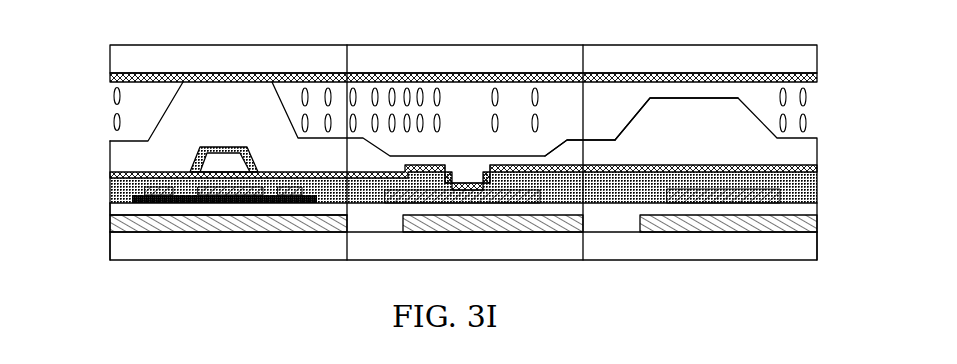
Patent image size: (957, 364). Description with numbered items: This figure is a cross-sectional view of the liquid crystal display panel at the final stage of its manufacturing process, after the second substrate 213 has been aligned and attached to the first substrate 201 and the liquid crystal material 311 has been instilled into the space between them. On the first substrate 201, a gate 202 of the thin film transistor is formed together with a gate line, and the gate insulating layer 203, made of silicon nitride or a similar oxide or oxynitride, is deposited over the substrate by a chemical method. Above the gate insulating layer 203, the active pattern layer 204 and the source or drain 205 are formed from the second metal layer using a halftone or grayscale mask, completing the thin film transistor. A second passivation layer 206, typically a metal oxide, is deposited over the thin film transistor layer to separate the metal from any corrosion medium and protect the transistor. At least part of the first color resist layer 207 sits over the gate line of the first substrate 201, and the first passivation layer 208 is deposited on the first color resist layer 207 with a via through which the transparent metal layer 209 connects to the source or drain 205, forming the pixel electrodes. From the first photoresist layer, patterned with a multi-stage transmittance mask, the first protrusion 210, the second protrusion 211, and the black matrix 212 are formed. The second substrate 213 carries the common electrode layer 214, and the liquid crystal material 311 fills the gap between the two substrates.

The first substrate 201 is at (120, 250).
The gate 202 is at (248, 225).
The gate insulating layer 203 is at (122, 212).
The active pattern layer 204 is at (128, 197).
The source or drain 205 is at (160, 192).
The second passivation layer 206 is at (112, 187).
The first color resist layer 207 is at (223, 162).
The first passivation layer 208 is at (112, 173).
The transparent metal layer 209 is at (505, 168).
The first protrusion 210 is at (183, 117).
The second protrusion 211 is at (665, 128).
The black matrix 212 is at (607, 147).
The second substrate 213 is at (123, 62).
The common electrode layer 214 is at (117, 84).
The liquid crystal material 311 is at (805, 102).